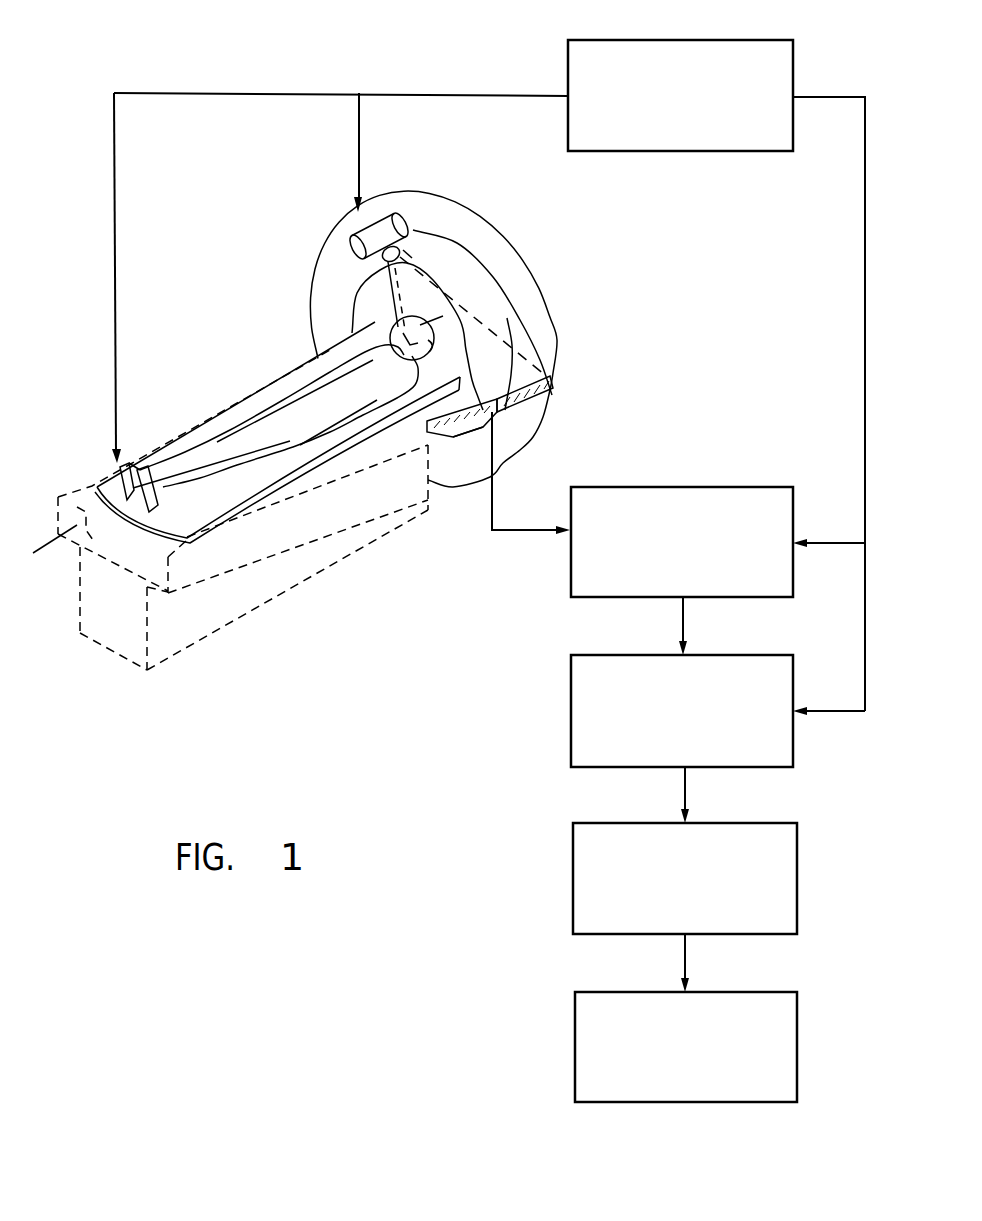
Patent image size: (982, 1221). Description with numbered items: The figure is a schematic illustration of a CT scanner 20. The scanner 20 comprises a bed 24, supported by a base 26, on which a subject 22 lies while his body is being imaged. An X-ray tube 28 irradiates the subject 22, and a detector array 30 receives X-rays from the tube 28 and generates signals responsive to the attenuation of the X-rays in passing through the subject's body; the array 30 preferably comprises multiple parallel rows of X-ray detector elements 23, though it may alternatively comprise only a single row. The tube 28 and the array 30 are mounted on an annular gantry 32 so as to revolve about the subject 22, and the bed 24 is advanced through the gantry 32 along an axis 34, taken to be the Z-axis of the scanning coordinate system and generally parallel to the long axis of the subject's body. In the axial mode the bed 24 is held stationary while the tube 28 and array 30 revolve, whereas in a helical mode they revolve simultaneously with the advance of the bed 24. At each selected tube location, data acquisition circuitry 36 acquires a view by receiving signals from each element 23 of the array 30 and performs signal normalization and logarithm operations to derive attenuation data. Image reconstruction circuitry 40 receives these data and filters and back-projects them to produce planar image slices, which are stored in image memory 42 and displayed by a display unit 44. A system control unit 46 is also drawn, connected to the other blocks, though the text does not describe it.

The CT scanner 20 is at (431, 64).
The subject 22 is at (220, 445).
The X-ray detector elements 23 is at (452, 442).
The bed 24 is at (255, 393).
The base 26 is at (313, 577).
The X-ray tube 28 is at (356, 212).
The detector array 30 is at (533, 400).
The annular gantry 32 is at (476, 228).
The axis 34 is at (47, 550).
The data acquisition circuitry 36 is at (795, 512).
The image reconstruction circuitry 40 is at (795, 680).
The image memory 42 is at (798, 845).
The display unit 44 is at (798, 1015).
The system control unit 46 is at (795, 62).